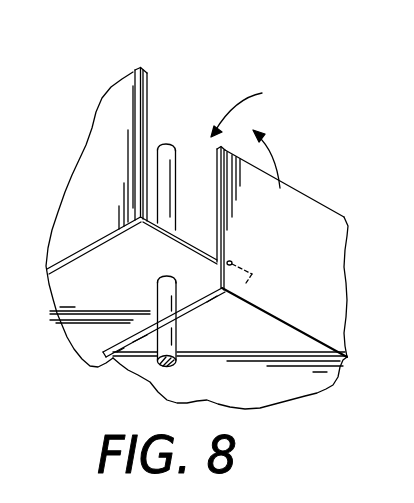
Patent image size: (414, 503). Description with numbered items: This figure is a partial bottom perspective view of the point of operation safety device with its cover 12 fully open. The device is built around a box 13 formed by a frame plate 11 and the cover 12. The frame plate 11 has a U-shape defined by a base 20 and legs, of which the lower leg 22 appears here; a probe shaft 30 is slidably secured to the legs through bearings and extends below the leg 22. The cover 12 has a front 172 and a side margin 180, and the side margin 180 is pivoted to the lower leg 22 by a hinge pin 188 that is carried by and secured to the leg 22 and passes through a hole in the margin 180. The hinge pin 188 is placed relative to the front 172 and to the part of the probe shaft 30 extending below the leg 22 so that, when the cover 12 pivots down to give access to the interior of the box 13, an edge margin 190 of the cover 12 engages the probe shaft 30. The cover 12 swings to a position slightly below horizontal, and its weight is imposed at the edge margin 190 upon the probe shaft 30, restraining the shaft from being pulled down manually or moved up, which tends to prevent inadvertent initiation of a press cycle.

The frame plate 11 is at (139, 66).
The cover 12 is at (302, 218).
The box 13 is at (295, 103).
The base 20 is at (117, 104).
The leg 22 is at (165, 231).
The probe shaft 30 is at (170, 156).
The front 172 is at (303, 386).
The side margin 180 is at (328, 220).
The hinge pin 188 is at (231, 262).
The edge margin 190 is at (178, 312).